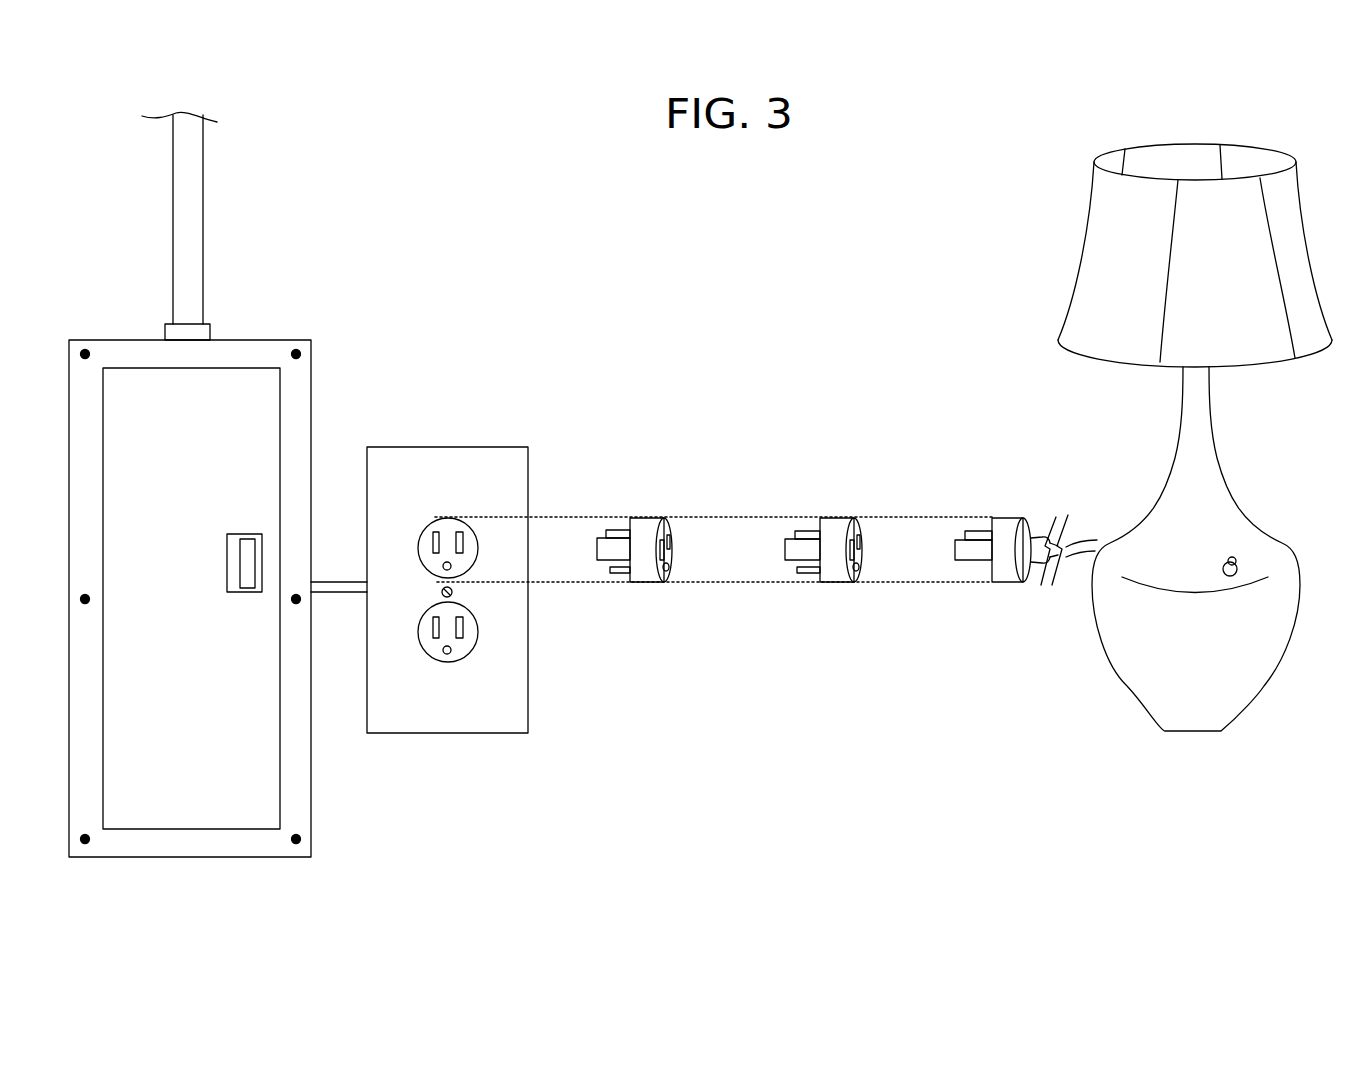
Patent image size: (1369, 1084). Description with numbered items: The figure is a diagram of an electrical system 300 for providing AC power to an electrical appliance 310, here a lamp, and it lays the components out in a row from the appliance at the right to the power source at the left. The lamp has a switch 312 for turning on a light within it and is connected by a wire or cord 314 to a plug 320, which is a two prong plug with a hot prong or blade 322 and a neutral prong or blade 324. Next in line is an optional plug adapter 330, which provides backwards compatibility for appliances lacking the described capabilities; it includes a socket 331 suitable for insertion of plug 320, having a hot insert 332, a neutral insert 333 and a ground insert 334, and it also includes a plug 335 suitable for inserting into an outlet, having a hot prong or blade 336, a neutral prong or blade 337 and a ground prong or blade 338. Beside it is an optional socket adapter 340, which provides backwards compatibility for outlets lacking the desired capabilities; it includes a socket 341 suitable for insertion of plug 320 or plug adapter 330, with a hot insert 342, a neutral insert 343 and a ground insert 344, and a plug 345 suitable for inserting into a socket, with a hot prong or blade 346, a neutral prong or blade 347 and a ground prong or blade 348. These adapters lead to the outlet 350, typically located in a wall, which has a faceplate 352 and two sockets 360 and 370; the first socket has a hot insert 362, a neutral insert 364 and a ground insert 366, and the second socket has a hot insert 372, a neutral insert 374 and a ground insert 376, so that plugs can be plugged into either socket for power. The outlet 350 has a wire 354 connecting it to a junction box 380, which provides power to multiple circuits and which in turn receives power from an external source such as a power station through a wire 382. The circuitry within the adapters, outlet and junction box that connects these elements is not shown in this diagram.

The electrical system 300 is at (565, 273).
The electrical appliance 310 is at (1195, 485).
The switch 312 is at (1222, 569).
The wire or cord 314 is at (1097, 545).
The plug 320 is at (992, 572).
The hot prong or blade 322 is at (963, 561).
The neutral prong or blade 324 is at (976, 531).
The plug adapter 330 is at (833, 569).
The socket 331 is at (855, 521).
The hot insert 332 is at (860, 561).
The neutral insert 333 is at (861, 541).
The ground insert 334 is at (859, 576).
The plug 335 is at (823, 520).
The hot prong or blade 336 is at (785, 547).
The neutral prong or blade 337 is at (796, 532).
The ground prong or blade 338 is at (799, 571).
The socket adapter 340 is at (637, 571).
The socket 341 is at (665, 521).
The hot insert 342 is at (670, 565).
The neutral insert 343 is at (672, 541).
The ground insert 344 is at (670, 576).
The plug 345 is at (633, 520).
The hot prong or blade 346 is at (597, 549).
The neutral prong or blade 347 is at (607, 531).
The ground prong or blade 348 is at (612, 571).
The outlet 350 is at (447, 634).
The faceplate 352 is at (373, 482).
The wire 354 is at (327, 582).
The socket 360 is at (438, 523).
The hot insert 362 is at (432, 542).
The neutral insert 364 is at (464, 545).
The ground insert 366 is at (444, 568).
The socket 370 is at (470, 660).
The hot insert 372 is at (432, 631).
The neutral insert 374 is at (465, 632).
The ground insert 376 is at (445, 653).
The junction box 380 is at (192, 857).
The wire 382 is at (203, 227).